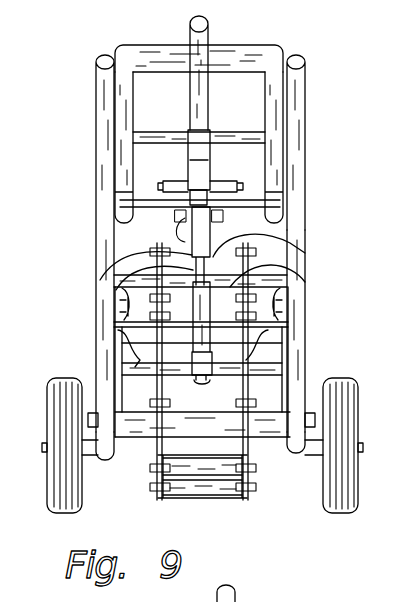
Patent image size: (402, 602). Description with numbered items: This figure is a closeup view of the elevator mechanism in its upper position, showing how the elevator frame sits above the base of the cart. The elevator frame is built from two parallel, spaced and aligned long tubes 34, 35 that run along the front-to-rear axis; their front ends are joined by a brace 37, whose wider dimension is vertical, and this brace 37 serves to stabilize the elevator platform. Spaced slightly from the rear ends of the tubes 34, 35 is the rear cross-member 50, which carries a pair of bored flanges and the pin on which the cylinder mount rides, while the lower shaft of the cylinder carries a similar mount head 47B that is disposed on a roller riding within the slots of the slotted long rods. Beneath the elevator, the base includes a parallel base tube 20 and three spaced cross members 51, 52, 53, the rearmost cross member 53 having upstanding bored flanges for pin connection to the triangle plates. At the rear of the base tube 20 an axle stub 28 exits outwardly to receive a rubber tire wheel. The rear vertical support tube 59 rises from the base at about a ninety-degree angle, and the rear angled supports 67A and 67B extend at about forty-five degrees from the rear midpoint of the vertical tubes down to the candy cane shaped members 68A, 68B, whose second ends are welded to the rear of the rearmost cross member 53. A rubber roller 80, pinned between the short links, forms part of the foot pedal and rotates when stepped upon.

The brace 37 is at (158, 58).
The long tube 34 is at (125, 107).
The long tube 35 is at (272, 122).
The rear vertical support tube 59 is at (296, 150).
The base tube 20 is at (120, 288).
The rear angled support 67A is at (100, 305).
The cross member 51 is at (118, 323).
The cross member 52 is at (138, 358).
The mount head 47B is at (300, 249).
The rear cross-member 50 is at (228, 283).
The rear angled support 67B is at (296, 320).
The axle stub 28 is at (92, 458).
The candy cane shaped member 68A is at (112, 458).
The rubber roller 80 is at (188, 470).
The rear cross member 53 is at (248, 453).
The candy cane shaped member 68B is at (296, 450).